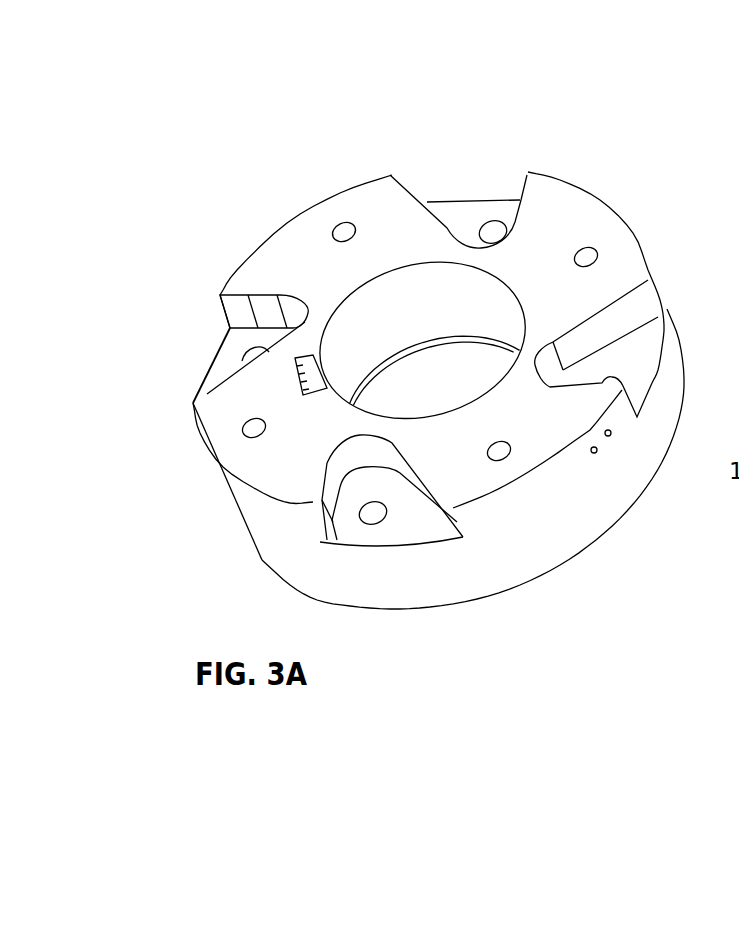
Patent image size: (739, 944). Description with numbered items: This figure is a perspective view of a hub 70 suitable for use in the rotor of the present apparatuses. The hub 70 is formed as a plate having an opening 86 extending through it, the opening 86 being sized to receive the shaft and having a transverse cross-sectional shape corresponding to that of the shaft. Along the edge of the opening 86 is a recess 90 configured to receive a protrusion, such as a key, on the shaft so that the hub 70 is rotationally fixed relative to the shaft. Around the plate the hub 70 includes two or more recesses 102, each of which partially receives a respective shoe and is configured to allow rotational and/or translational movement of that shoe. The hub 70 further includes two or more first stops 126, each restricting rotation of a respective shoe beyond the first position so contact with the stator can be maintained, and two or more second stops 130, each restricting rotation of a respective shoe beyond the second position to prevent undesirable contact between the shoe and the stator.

The hub 70 is at (351, 166).
The opening 86 is at (439, 262).
The recesses 102 is at (491, 171).
The first stops 126 is at (262, 294).
The second stops 130 is at (229, 295).
The recess 90 is at (298, 378).